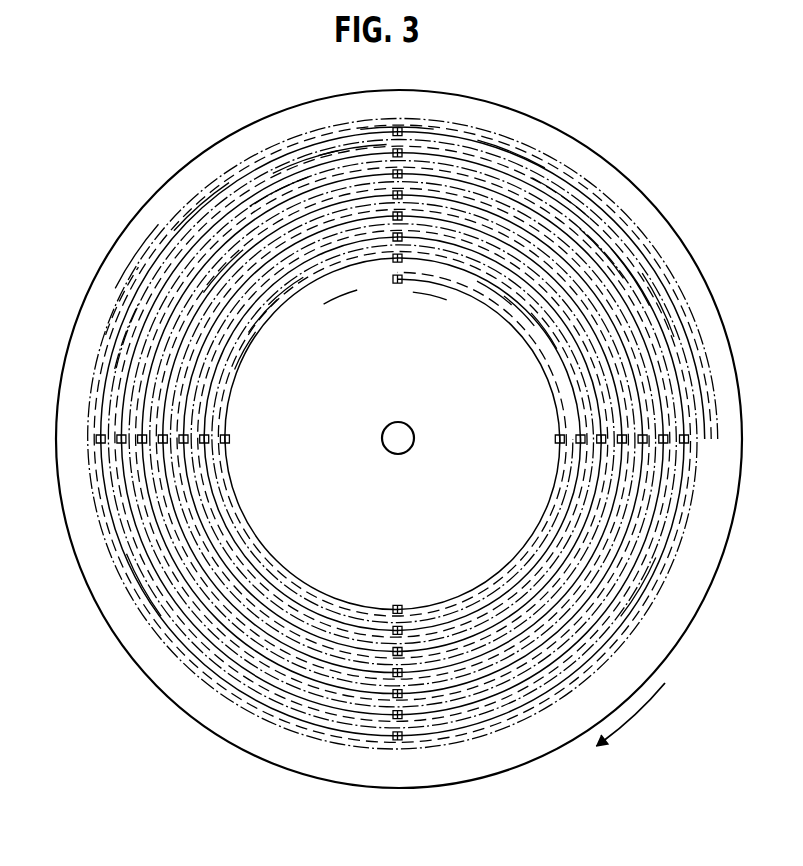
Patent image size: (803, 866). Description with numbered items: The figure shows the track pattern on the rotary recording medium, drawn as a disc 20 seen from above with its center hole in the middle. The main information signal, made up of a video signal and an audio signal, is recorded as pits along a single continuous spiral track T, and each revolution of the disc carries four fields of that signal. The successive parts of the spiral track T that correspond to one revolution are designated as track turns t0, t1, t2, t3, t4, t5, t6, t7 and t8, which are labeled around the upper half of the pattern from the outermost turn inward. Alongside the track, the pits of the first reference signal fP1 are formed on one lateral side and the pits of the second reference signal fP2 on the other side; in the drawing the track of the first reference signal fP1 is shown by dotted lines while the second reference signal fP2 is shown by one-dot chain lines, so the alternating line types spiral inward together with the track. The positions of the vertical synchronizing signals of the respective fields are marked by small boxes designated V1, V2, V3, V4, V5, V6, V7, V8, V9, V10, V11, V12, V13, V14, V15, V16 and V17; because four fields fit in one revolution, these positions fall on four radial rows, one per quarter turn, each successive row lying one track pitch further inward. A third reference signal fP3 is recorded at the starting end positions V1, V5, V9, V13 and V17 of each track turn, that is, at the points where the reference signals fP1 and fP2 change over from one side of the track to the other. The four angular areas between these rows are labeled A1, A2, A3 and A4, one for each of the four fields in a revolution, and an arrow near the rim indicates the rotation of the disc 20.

The disk 20 is at (718, 292).
The spiral track T is at (200, 205).
The track t0 is at (512, 152).
The track turn t1 is at (305, 160).
The track turn t2 is at (352, 148).
The track turn t3 is at (278, 190).
The track turn t4 is at (222, 270).
The track turn t5 is at (285, 290).
The track turn t6 is at (262, 315).
The track turn t7 is at (244, 350).
The track turn t8 is at (340, 296).
The first reference signal fP1 is at (120, 302).
The second reference signal fP2 is at (125, 337).
The third reference signal fP3 is at (395, 128).
The sector A1 is at (140, 290).
The sector A2 is at (142, 586).
The sector A3 is at (640, 588).
The sector A4 is at (660, 304).
The vertical synchronizing signal position V1 is at (404, 130).
The vertical synchronizing signal position V2 is at (97, 438).
The vertical synchronizing signal position V3 is at (397, 742).
The vertical synchronizing signal position V4 is at (690, 440).
The vertical synchronizing signal position V5 is at (404, 153).
The vertical synchronizing signal position V6 is at (119, 444).
The vertical synchronizing signal position V7 is at (393, 715).
The vertical synchronizing signal position V8 is at (668, 444).
The vertical synchronizing signal position V9 is at (404, 174).
The vertical synchronizing signal position V10 is at (140, 432).
The vertical synchronizing signal position V11 is at (393, 694).
The vertical synchronizing signal position V12 is at (647, 432).
The vertical synchronizing signal position V13 is at (404, 195).
The vertical synchronizing signal position V14 is at (160, 444).
The vertical synchronizing signal position V15 is at (393, 672).
The vertical synchronizing signal position V16 is at (620, 432).
The vertical synchronizing signal position V17 is at (404, 216).